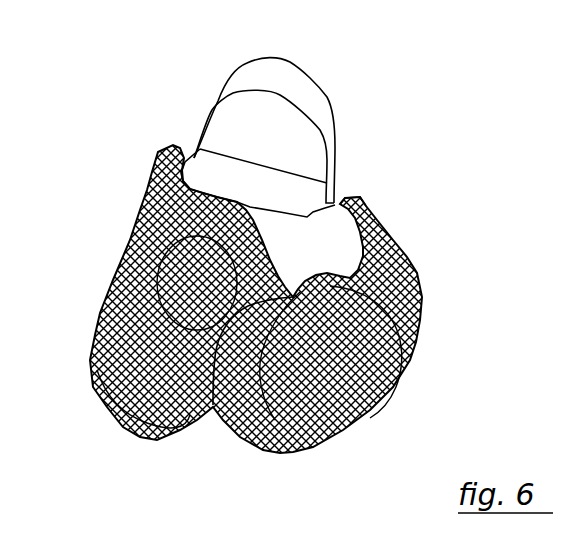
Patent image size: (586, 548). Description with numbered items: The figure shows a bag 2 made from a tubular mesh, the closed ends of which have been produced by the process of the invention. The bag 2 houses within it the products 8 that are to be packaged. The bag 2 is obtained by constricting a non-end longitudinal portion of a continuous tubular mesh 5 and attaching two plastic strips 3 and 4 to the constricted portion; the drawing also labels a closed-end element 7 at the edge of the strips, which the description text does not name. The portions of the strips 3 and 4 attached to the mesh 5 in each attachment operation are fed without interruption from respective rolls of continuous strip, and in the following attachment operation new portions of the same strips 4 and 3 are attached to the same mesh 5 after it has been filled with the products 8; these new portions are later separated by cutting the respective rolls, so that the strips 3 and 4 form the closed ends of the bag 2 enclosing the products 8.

The bag 2 is at (130, 228).
The plastic strip 3 is at (243, 168).
The plastic strip 4 is at (312, 77).
The continuous tubular mesh 5 is at (362, 205).
The rim of the cap 7 is at (333, 98).
The products 8 is at (372, 298).